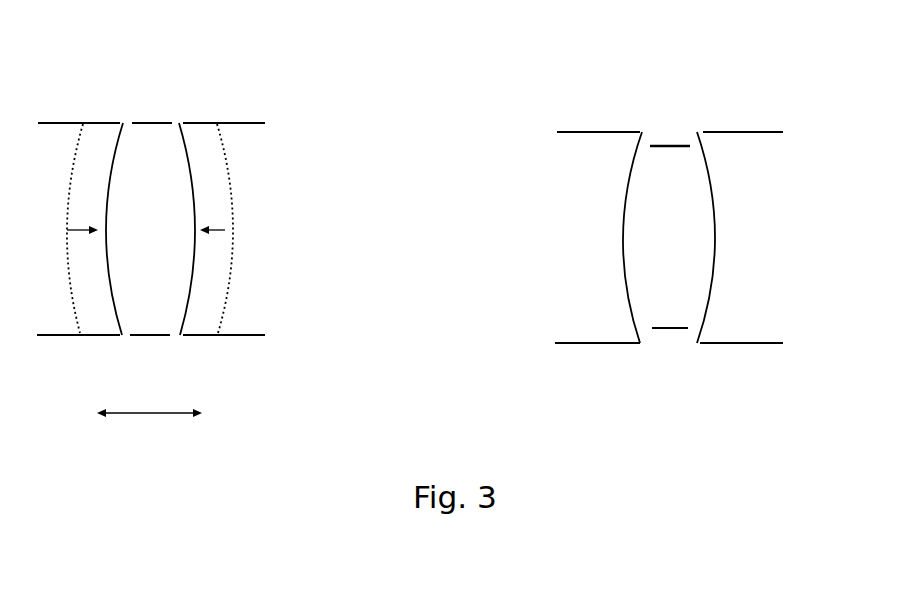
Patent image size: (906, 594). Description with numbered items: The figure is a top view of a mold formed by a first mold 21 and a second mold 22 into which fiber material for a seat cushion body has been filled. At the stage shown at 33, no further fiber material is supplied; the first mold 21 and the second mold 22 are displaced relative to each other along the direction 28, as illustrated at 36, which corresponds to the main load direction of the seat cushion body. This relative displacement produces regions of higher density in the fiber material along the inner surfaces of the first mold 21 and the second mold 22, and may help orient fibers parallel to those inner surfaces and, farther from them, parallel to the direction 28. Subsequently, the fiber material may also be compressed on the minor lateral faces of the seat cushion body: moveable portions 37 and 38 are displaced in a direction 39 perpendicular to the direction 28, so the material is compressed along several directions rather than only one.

The first mold 21 is at (116, 131).
The second mold 22 is at (184, 130).
The direction 28 is at (172, 413).
The state with filled fiber material 33 is at (71, 47).
The displacement of the molds 36 is at (79, 230).
The moveable portion 37 is at (153, 123).
The moveable portion 38 is at (153, 334).
The direction 39 is at (589, 56).